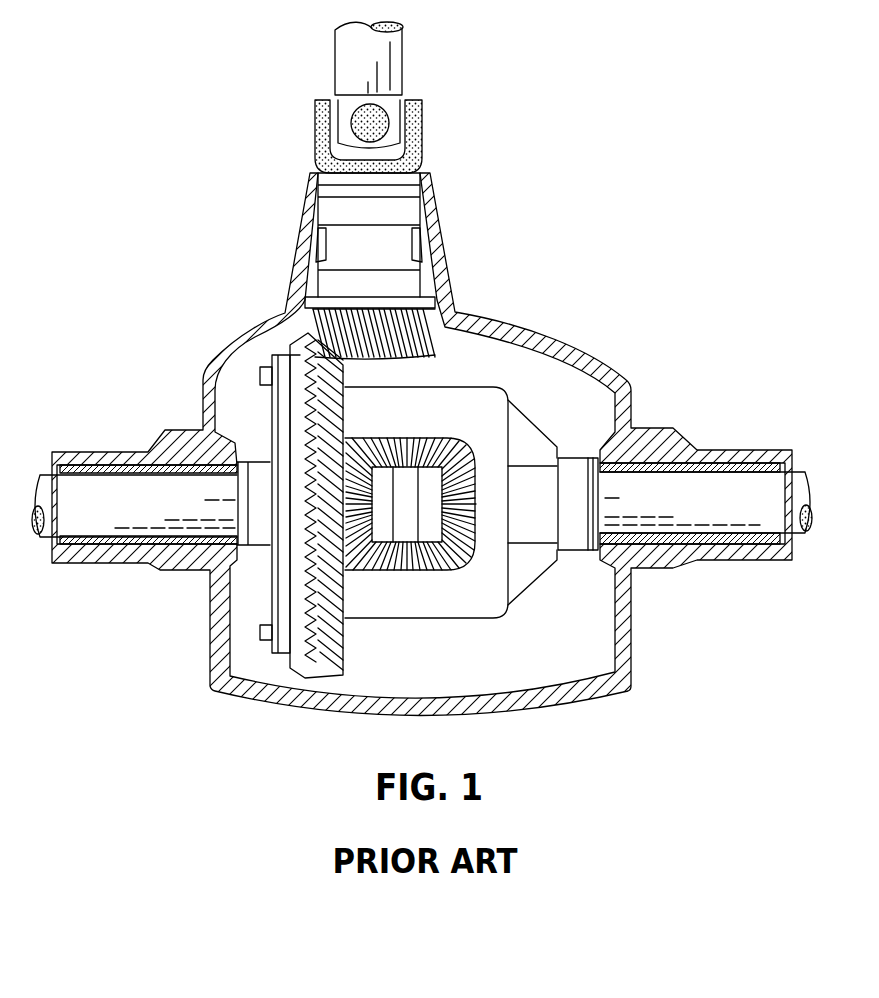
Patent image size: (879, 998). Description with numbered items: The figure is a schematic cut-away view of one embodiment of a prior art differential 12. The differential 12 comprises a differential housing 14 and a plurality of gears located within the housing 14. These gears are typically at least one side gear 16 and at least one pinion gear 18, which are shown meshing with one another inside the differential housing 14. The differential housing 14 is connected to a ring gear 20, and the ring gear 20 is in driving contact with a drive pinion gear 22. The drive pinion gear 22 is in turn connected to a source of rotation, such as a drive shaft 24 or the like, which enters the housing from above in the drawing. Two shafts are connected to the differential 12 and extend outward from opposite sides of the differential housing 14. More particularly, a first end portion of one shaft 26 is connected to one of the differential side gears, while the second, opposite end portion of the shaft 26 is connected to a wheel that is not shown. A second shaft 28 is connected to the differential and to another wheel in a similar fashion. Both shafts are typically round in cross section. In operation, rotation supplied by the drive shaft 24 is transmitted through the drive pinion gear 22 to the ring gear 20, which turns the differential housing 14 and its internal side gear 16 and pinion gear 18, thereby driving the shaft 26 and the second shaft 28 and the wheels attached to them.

The differential 12 is at (516, 296).
The differential housing 14 is at (590, 352).
The side gear 16 is at (476, 500).
The pinion gear 18 is at (405, 438).
The ring gear 20 is at (333, 658).
The drive pinion gear 22 is at (420, 350).
The drive shaft 24 is at (404, 58).
The shaft 26 is at (575, 552).
The second shaft 28 is at (260, 548).